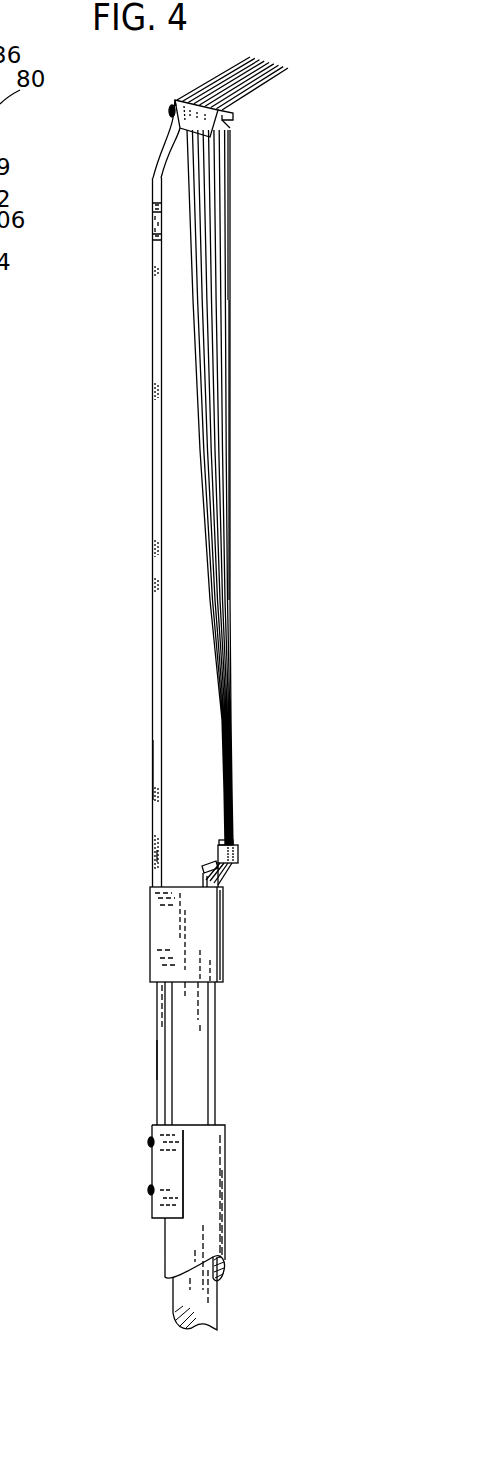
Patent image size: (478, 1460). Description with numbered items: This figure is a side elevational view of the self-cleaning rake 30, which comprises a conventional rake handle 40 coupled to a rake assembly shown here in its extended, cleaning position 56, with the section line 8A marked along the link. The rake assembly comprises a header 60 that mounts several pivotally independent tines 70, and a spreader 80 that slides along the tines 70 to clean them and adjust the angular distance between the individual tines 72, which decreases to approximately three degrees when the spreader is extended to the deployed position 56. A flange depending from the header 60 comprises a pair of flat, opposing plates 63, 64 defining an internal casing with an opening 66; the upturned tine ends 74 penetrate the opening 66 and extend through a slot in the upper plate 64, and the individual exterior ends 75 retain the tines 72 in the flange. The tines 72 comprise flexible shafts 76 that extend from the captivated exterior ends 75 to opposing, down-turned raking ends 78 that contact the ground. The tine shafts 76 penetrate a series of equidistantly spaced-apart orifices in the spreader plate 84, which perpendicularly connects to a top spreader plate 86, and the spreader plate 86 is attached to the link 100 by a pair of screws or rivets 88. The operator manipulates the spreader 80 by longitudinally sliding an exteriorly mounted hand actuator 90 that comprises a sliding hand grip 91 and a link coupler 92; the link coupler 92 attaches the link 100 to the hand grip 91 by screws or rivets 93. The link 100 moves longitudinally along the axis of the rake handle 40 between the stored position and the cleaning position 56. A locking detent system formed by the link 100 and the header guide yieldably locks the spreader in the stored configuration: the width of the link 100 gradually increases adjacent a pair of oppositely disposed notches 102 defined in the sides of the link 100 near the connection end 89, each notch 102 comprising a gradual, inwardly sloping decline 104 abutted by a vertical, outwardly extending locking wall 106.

The self-cleaning rake 30 is at (70, 856).
The rake handle 40 is at (229, 1044).
The extended, cleaning position 56 is at (135, 815).
The header 60 is at (239, 938).
The plate 63 is at (236, 843).
The upper plate 64 is at (203, 886).
The opening 66 is at (250, 869).
The tines 70 is at (237, 185).
The individual tines 72 is at (228, 262).
The upturned tine ends 74 is at (217, 864).
The exterior ends 75 is at (205, 862).
The flexible shafts 76 is at (230, 408).
The down-turned raking ends 78 is at (250, 57).
The spreader 80 is at (222, 129).
The spreader plate 84 is at (234, 113).
The top spreader plate 86 is at (172, 100).
The screws or rivets 88 is at (167, 109).
The connection end 89 is at (162, 148).
The hand actuator 90 is at (246, 1229).
The sliding hand grip 91 is at (178, 1252).
The link coupler 92 is at (175, 1173).
The screws or rivets 93 is at (148, 1142).
The link 100 is at (151, 782).
The notches 102 is at (149, 223).
The inwardly sloping decline 104 is at (150, 234).
The locking wall 106 is at (152, 210).
The section line 8A is at (159, 856).